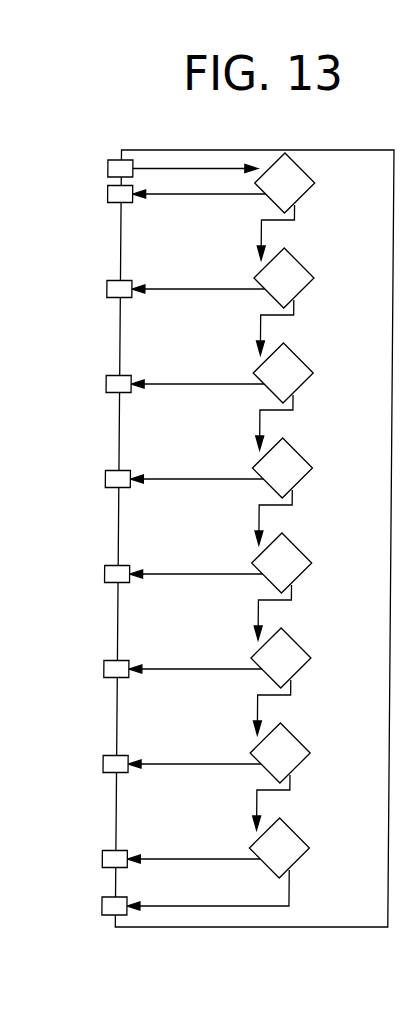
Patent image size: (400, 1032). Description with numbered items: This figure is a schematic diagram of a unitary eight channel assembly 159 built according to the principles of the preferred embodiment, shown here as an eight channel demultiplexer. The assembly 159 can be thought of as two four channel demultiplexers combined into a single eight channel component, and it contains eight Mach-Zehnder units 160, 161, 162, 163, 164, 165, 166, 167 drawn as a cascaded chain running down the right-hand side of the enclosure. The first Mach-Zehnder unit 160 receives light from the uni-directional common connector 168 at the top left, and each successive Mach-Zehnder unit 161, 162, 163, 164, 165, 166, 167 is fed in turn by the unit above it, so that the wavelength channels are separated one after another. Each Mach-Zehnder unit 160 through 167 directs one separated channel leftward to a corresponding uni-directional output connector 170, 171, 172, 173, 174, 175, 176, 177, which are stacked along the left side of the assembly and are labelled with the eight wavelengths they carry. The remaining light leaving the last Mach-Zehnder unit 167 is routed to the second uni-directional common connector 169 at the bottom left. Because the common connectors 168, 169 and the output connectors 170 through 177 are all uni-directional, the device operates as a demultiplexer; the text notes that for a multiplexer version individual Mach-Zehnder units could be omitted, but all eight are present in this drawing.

The wavelength demultiplexer module 159 is at (340, 162).
The Mach-Zehnder unit 160 is at (300, 186).
The Mach-Zehnder unit 161 is at (300, 281).
The Mach-Zehnder unit 162 is at (300, 376).
The Mach-Zehnder unit 163 is at (300, 471).
The Mach-Zehnder unit 164 is at (300, 566).
The Mach-Zehnder unit 165 is at (300, 661).
The Mach-Zehnder unit 166 is at (300, 756).
The Mach-Zehnder unit 167 is at (300, 851).
The uni-directional common connector 168 is at (108, 161).
The uni-directional common connector 169 is at (104, 913).
The uni-directional output connector 170 is at (108, 203).
The uni-directional output connector 171 is at (113, 294).
The uni-directional output connector 172 is at (108, 389).
The uni-directional output connector 173 is at (108, 478).
The uni-directional output connector 174 is at (108, 583).
The uni-directional output connector 175 is at (114, 675).
The uni-directional output connector 176 is at (113, 772).
The uni-directional output connector 177 is at (108, 863).